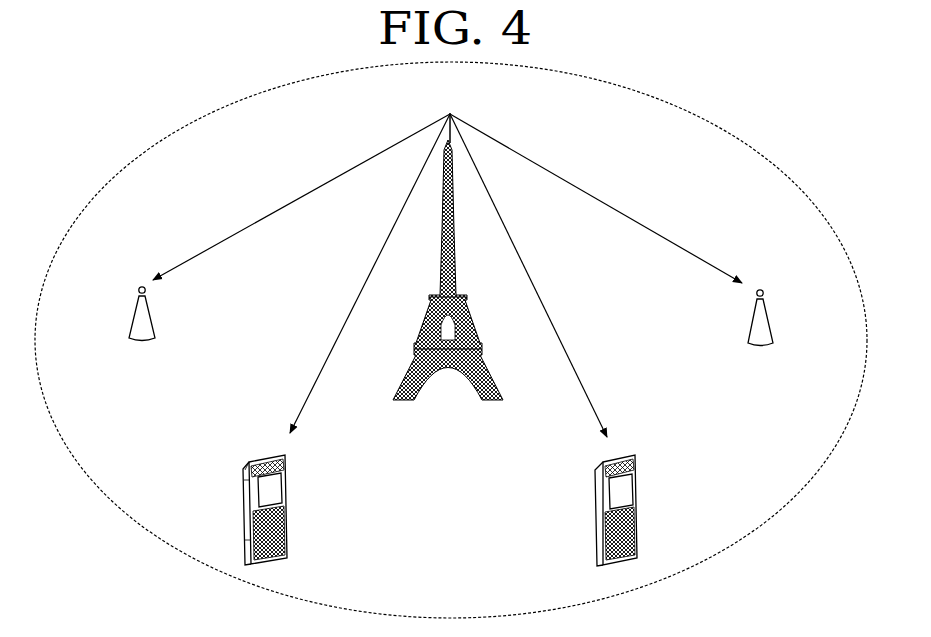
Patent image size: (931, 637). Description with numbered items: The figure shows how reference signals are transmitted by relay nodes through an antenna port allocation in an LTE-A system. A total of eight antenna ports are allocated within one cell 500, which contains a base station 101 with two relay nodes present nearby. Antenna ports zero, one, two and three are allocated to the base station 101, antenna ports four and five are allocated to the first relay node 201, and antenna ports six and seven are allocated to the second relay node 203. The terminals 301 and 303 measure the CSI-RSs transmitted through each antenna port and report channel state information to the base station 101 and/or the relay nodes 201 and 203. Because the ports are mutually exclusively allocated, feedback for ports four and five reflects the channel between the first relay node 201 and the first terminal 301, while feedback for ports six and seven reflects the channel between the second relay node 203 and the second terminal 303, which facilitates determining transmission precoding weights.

The base station 101 is at (470, 327).
The first relay node 201 is at (133, 317).
The second relay node 203 is at (770, 320).
The first terminal 301 is at (242, 518).
The second terminal 303 is at (636, 502).
The cell 500 is at (772, 518).